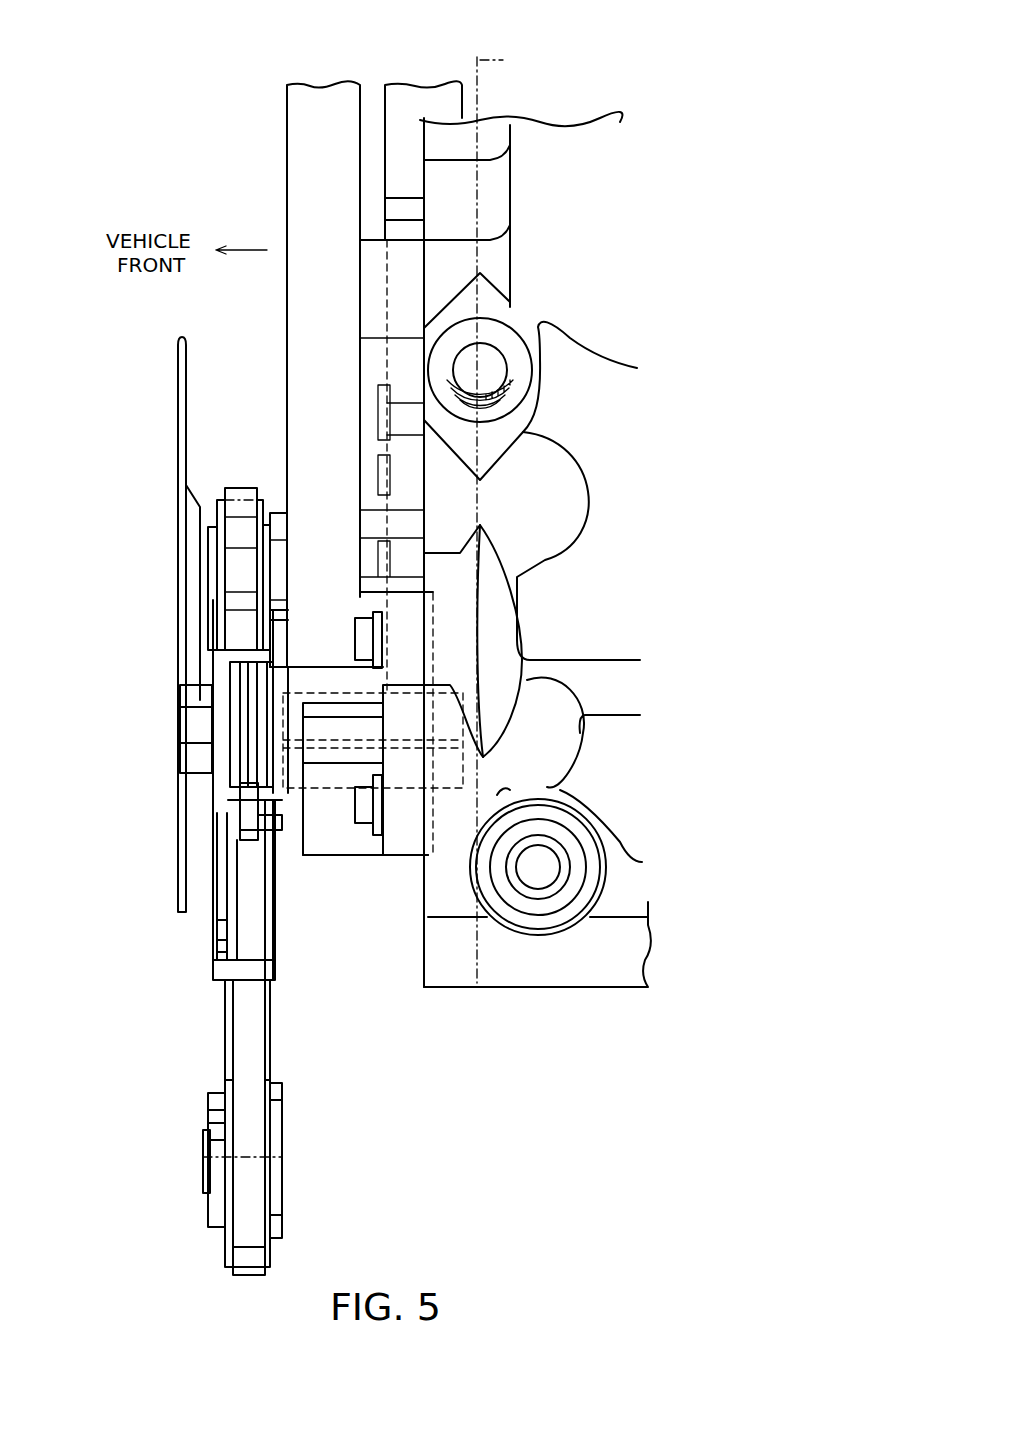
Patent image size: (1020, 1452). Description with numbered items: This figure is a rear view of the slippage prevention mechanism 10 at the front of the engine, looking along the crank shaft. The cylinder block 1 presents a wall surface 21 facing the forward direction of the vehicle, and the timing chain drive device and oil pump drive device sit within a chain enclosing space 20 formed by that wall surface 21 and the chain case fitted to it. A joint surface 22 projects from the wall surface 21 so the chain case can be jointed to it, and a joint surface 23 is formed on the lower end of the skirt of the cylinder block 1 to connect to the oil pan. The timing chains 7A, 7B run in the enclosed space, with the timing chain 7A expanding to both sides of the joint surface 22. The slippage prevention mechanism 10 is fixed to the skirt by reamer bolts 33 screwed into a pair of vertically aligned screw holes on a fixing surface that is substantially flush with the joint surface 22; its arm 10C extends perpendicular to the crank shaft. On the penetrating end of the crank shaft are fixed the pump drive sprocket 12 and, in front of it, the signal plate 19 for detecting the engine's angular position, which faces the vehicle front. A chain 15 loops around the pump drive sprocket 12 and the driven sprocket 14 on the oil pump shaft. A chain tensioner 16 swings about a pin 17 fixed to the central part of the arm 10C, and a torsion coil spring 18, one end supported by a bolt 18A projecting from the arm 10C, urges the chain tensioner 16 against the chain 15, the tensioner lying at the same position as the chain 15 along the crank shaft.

The cylinder block 1 is at (564, 90).
The timing chain 7A is at (402, 97).
The timing chain 7B is at (302, 103).
The slippage prevention mechanism 10 is at (391, 877).
The arm 10C is at (336, 770).
The pump drive sprocket 12 is at (200, 600).
The driven sprocket 14 is at (200, 1138).
The chain 15 is at (245, 1027).
The chain tensioner 16 is at (213, 978).
The pin 17 is at (177, 730).
The torsion coil spring 18 is at (252, 758).
The bolt 18A is at (253, 812).
The signal plate 19 is at (176, 370).
The chain enclosing space 20 is at (243, 159).
The wall surface 21 is at (473, 70).
The joint surface 22 is at (427, 960).
The joint surface 23 is at (533, 990).
The reamer bolts 33 is at (355, 630).